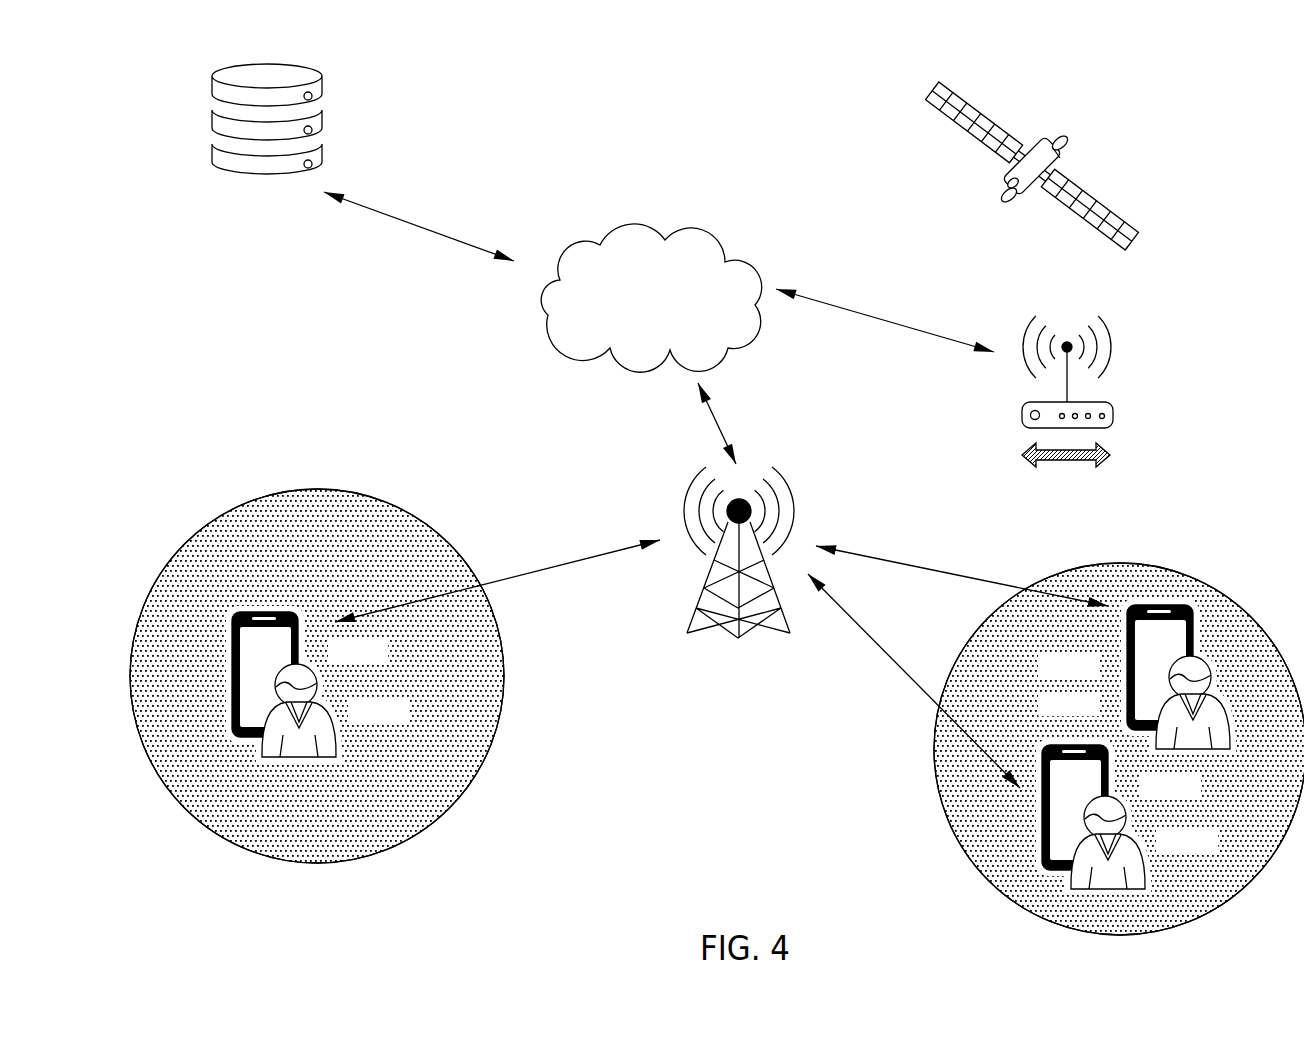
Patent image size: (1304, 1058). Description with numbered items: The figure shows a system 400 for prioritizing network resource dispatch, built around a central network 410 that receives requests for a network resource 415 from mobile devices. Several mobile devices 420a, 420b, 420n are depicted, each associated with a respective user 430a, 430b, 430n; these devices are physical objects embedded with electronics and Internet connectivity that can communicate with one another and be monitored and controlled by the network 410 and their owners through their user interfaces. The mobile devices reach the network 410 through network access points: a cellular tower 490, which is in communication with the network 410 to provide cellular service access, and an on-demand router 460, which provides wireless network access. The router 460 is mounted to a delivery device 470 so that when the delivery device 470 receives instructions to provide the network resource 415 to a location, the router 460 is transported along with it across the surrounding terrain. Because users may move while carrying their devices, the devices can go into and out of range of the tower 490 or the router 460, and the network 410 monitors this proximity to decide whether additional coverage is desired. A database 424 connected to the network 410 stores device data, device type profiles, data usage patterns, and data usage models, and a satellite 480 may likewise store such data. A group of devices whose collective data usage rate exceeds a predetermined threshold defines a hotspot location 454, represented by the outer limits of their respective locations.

The system 400 is at (1160, 104).
The network 410 is at (671, 326).
The network resource 415 is at (1106, 329).
The mobile device 420a is at (299, 648).
The mobile device 420b is at (1127, 663).
The mobile device 420n is at (1109, 781).
The database 424 is at (323, 120).
The user 430a is at (323, 708).
The user 430b is at (1157, 712).
The user 430n is at (1133, 838).
The hotspot location 454 is at (1213, 587).
The on-demand router 460 is at (1114, 413).
The delivery device 470 is at (1111, 453).
The satellite 480 is at (1009, 180).
The cellular tower 490 is at (794, 490).